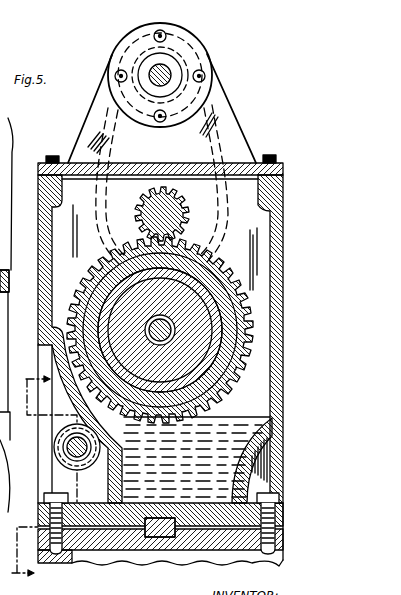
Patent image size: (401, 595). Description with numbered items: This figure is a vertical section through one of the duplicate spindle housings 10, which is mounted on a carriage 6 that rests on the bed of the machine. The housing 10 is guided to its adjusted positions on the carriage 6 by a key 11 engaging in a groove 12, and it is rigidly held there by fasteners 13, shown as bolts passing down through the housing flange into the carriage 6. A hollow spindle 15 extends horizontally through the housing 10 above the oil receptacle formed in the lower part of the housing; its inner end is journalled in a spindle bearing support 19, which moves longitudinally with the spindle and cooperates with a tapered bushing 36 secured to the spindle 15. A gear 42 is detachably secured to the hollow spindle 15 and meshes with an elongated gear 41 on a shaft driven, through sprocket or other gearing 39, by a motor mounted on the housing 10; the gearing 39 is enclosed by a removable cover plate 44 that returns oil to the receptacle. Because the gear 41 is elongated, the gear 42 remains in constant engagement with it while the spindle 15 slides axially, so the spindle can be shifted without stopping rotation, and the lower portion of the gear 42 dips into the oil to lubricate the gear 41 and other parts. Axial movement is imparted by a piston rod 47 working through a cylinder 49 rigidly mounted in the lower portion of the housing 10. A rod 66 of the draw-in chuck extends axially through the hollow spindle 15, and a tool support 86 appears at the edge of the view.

The carriage 6 is at (283, 549).
The spindle housing 10 is at (280, 284).
The key 11 is at (176, 568).
The groove 12 is at (168, 518).
The fastener 13 is at (68, 498).
The hollow spindle 15 is at (198, 355).
The spindle bearing support 19 is at (222, 346).
The tapered bushing 36 is at (218, 315).
The gearing 39 is at (133, 92).
The elongated gear 41 is at (187, 209).
The gear 42 is at (232, 279).
The cover plate 44 is at (224, 95).
The piston rod 47 is at (70, 446).
The cylinder 49 is at (74, 469).
The rod 66 is at (175, 329).
The tool support 86 is at (13, 146).